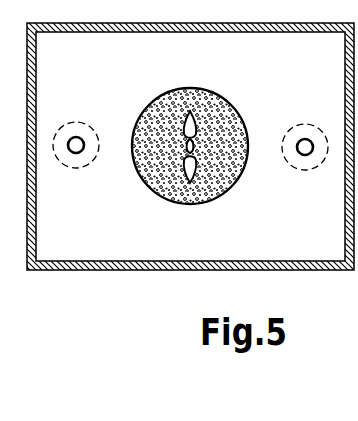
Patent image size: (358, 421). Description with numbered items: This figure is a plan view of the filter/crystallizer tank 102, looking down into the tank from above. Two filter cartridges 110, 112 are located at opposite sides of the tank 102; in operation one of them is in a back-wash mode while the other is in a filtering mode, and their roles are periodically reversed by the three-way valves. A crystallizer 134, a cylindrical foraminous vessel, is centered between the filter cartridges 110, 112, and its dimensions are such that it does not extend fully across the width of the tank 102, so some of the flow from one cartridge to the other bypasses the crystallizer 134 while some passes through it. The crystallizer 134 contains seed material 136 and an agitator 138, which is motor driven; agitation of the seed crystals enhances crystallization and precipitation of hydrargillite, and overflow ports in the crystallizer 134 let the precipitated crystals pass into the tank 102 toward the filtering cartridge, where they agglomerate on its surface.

The tank 102 is at (115, 268).
The filter cartridge 110 is at (313, 170).
The filter cartridge 112 is at (76, 168).
The crystallizer 134 is at (185, 203).
The seed material 136 is at (141, 121).
The agitator 138 is at (193, 114).